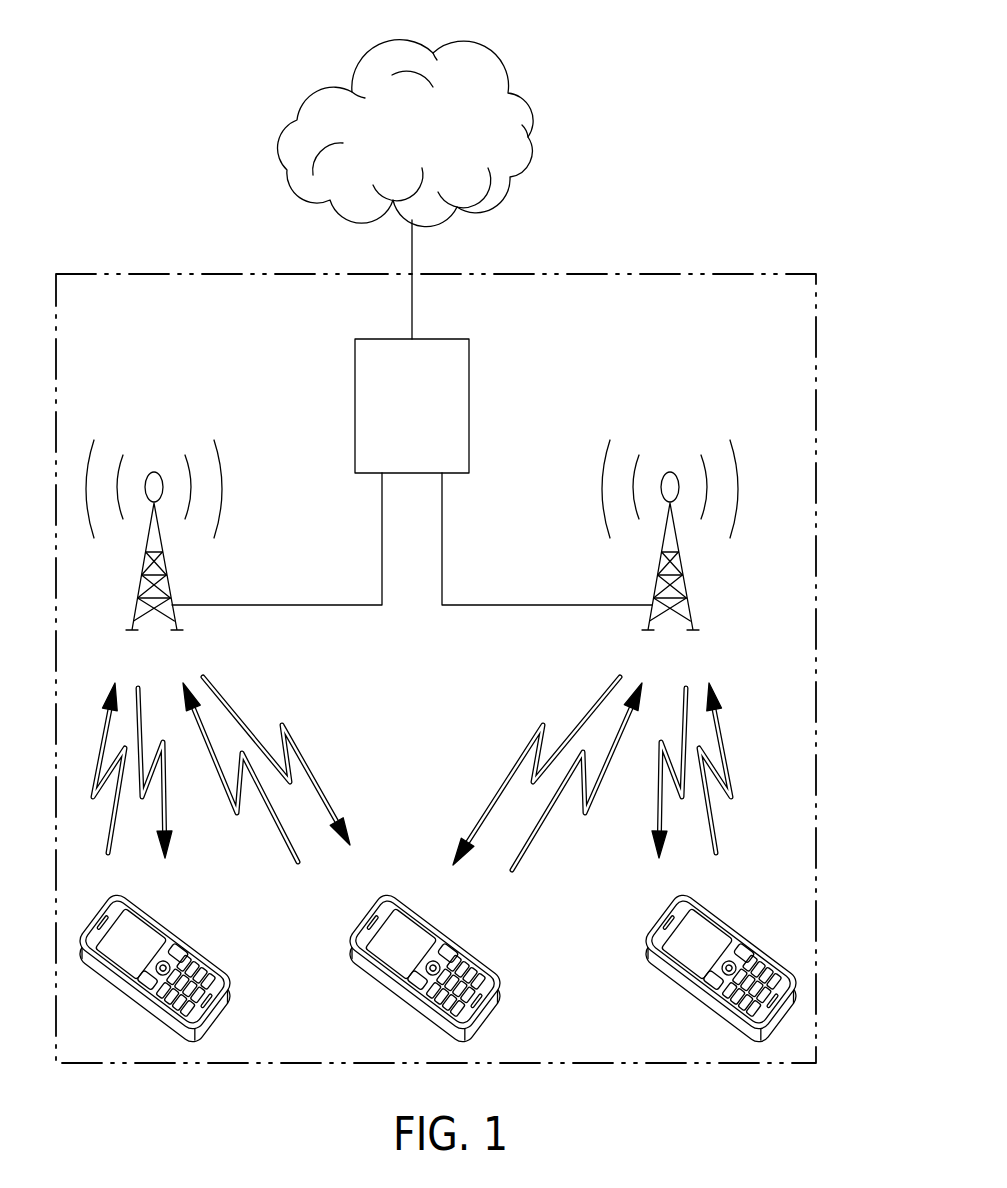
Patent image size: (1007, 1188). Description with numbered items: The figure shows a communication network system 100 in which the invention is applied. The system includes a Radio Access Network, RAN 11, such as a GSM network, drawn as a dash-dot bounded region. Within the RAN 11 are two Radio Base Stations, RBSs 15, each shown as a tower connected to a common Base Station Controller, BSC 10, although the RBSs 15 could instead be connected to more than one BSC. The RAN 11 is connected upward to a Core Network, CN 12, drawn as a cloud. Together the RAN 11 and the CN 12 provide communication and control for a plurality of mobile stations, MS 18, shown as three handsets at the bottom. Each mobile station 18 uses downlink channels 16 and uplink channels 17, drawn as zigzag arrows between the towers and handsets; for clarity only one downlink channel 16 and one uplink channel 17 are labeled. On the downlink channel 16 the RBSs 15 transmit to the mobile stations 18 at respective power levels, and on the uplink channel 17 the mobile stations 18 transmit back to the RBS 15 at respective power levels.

The communication network system 100 is at (710, 68).
The Radio Access Network (RAN) 11 is at (715, 269).
The Core network (CN) 12 is at (483, 143).
The Base Station Controller (BSC) 10 is at (440, 393).
The Radio Base Station (RBS) 15 is at (170, 582).
The downlink channel 16 is at (310, 772).
The uplink channel 17 is at (110, 832).
The mobile station (MS) 18 is at (223, 1013).